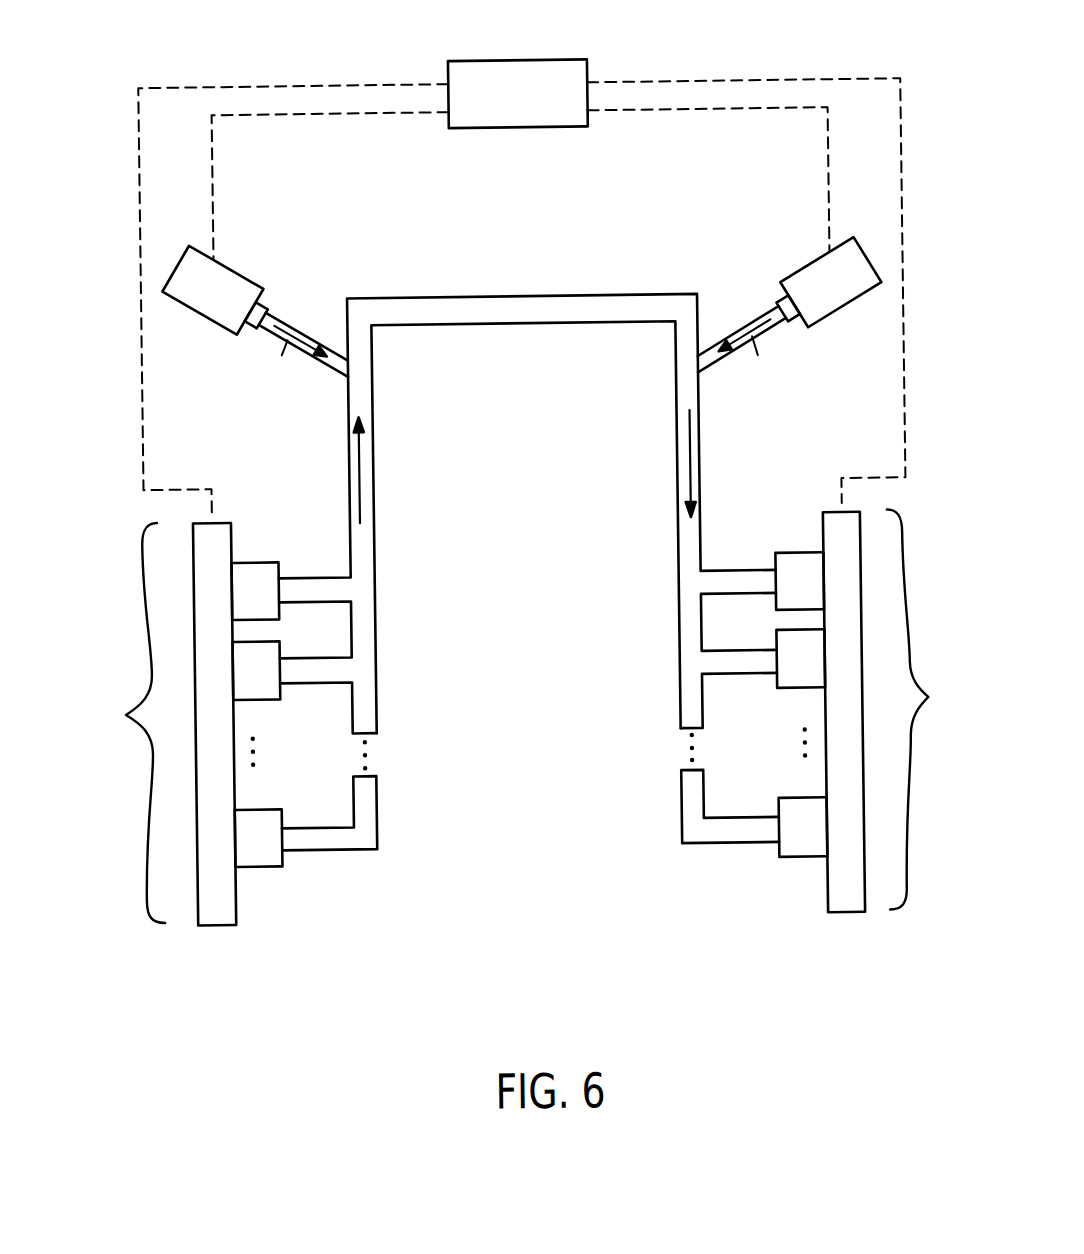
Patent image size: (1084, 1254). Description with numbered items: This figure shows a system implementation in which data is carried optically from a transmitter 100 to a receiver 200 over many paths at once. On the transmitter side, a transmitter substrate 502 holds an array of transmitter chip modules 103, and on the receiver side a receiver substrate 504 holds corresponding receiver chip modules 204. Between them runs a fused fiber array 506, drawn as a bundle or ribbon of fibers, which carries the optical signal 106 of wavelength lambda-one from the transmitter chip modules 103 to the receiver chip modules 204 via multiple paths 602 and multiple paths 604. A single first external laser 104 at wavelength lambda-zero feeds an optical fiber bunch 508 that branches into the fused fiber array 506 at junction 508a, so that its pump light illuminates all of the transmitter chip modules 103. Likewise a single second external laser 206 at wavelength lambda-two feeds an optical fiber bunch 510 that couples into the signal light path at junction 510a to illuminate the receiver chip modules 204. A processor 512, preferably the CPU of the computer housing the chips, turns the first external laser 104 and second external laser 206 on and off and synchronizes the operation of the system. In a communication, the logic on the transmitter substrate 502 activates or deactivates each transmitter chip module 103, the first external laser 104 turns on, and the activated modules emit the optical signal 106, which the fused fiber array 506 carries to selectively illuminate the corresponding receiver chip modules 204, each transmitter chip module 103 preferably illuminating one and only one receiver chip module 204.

The transmitter 100 is at (120, 723).
The transmitter chip module 103 is at (248, 569).
The first external laser 104 is at (196, 304).
The optical signal 106 is at (364, 486).
The receiver 200 is at (933, 708).
The receiver chip module 204 is at (800, 570).
The second external laser 206 is at (862, 301).
The transmitter substrate 502 is at (219, 903).
The receiver substrate 504 is at (841, 901).
The fused fiber array 506 is at (511, 294).
The optical fiber bunch 508 is at (298, 326).
The junction 508a is at (349, 374).
The optical fiber bunch 510 is at (738, 335).
The junction 510a is at (704, 385).
The processor 512 is at (529, 59).
The multiple paths 602 is at (327, 599).
The multiple paths 604 is at (733, 596).